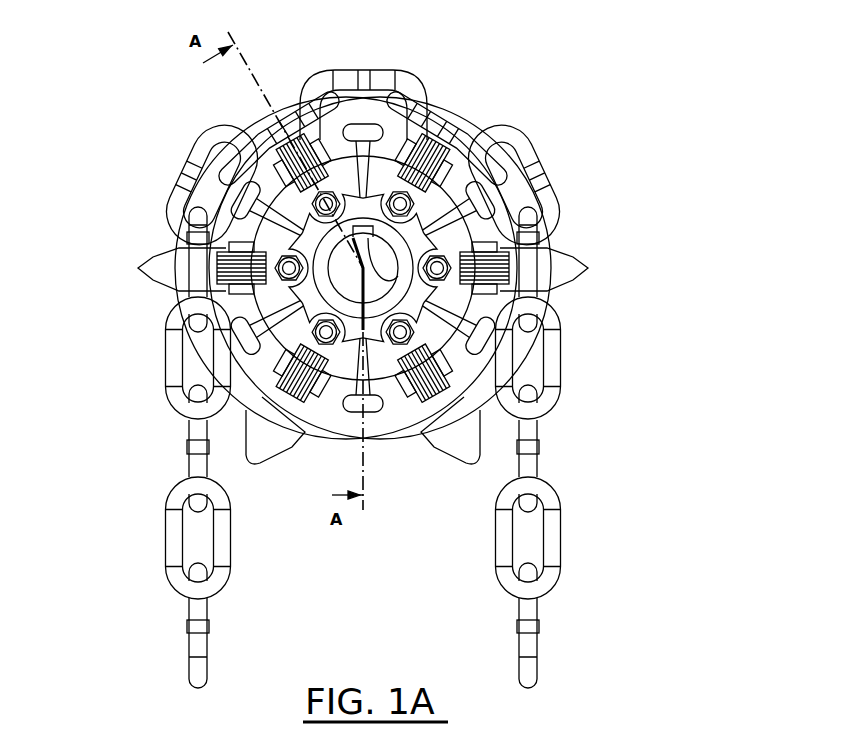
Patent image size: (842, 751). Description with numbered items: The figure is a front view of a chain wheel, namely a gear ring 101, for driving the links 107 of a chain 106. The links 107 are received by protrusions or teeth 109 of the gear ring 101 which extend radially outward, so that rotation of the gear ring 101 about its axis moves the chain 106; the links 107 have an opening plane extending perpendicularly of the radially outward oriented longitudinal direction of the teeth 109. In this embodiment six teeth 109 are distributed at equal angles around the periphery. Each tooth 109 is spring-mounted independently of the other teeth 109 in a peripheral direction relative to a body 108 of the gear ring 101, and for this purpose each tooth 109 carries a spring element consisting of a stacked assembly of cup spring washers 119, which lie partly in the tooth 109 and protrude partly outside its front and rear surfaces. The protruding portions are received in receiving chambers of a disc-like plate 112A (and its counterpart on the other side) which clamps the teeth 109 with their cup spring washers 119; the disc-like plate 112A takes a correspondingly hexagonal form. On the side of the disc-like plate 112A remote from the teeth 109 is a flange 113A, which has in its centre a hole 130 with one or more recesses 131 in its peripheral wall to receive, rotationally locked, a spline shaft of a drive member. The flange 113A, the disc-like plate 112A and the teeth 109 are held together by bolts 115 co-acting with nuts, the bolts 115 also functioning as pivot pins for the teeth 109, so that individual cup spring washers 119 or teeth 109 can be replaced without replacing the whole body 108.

The gear ring 101 is at (412, 490).
The chain 106 is at (575, 370).
The links 107 is at (551, 519).
The body 108 is at (321, 438).
The teeth 109 is at (470, 100).
The disc-like plate 112A is at (240, 175).
The flange 113A is at (242, 200).
The bolts 115 is at (287, 277).
The cup spring washers 119 is at (500, 172).
The hole 130 is at (352, 277).
The recesses 131 is at (405, 292).